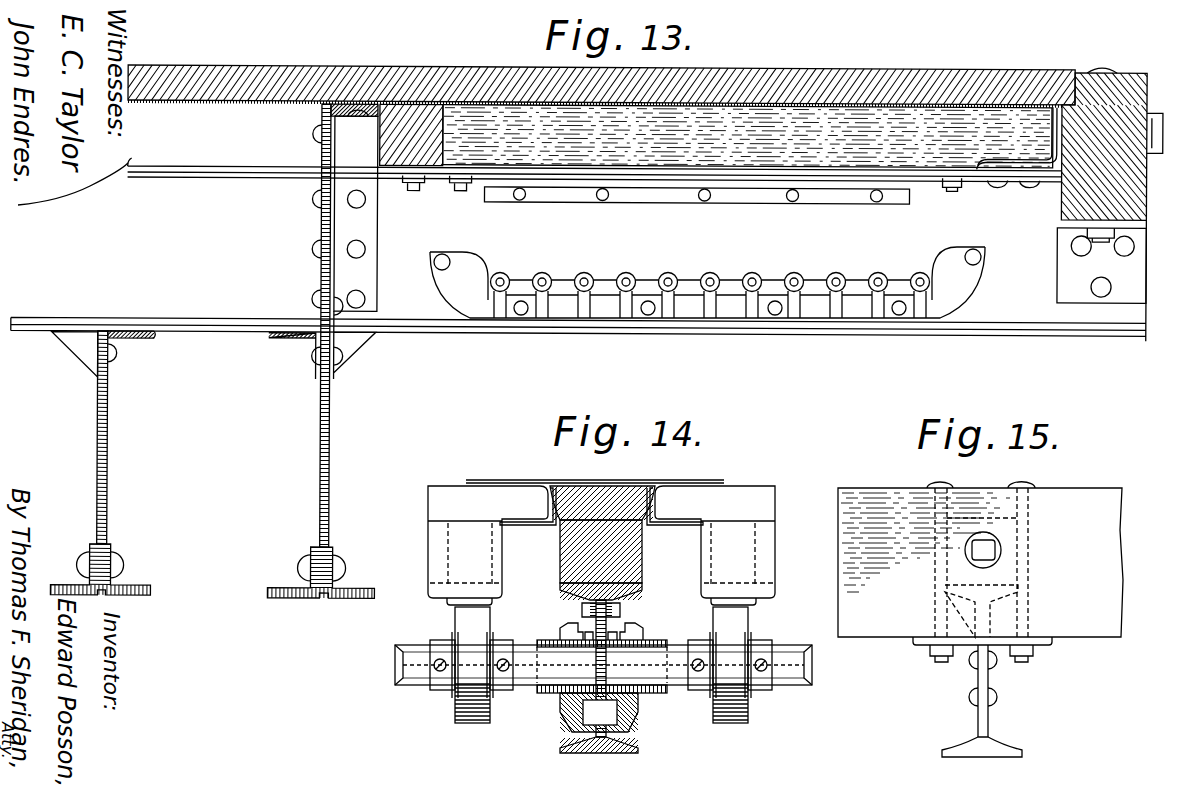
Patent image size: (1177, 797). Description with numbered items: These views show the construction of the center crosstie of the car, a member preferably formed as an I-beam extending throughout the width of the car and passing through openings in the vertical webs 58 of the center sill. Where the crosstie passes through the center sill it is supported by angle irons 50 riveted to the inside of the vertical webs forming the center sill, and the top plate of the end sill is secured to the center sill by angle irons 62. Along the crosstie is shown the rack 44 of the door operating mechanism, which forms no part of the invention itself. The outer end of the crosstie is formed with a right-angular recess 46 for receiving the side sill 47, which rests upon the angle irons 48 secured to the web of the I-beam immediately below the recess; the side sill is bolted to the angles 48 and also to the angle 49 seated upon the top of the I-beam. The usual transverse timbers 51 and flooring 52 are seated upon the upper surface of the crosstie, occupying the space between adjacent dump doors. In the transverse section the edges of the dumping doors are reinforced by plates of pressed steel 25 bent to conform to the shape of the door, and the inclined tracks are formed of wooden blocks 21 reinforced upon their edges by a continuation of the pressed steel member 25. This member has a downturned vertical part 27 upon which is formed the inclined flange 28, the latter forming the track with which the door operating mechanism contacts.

In FIG. 13, the angle irons 62 is at (325, 116).
In FIG. 13, the angle irons 50 is at (120, 340).
In FIG. 13, the rack 44 is at (688, 312).
In FIG. 14, the rack 44 is at (538, 690).
In FIG. 13, the angle 49 is at (1007, 165).
In FIG. 13, the right-angular recess 46 is at (1062, 195).
In FIG. 13, the side sill 47 is at (1093, 188).
In FIG. 15, the side sill 47 is at (980, 559).
In FIG. 13, the angle irons 48 is at (1072, 270).
In FIG. 15, the angle irons 48 is at (973, 682).
In FIG. 13, the webs 58 is at (321, 458).
In FIG. 14, the wooden blocks 21 is at (489, 503).
In FIG. 14, the pressed steel member 25 is at (540, 472).
In FIG. 14, the downturned vertical part 27 is at (498, 555).
In FIG. 14, the inclined flange 28 is at (483, 598).
In FIG. 14, the flooring 52 is at (620, 490).
In FIG. 14, the transverse timbers 51 is at (642, 553).